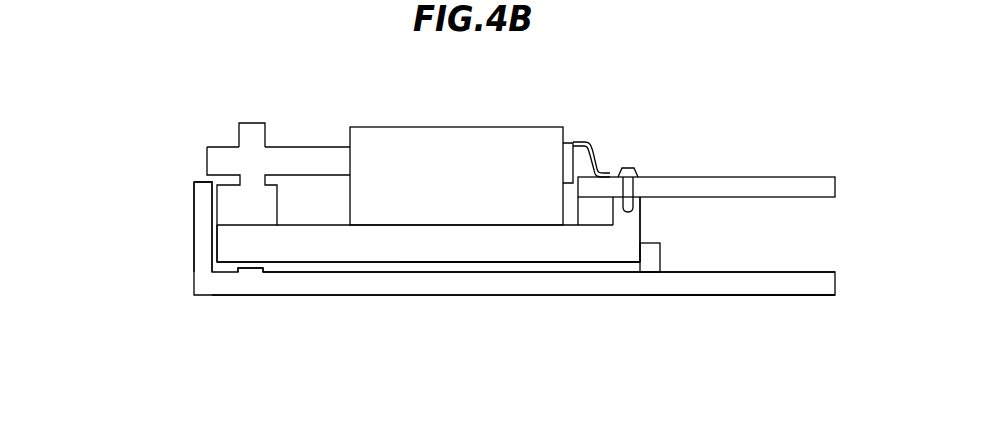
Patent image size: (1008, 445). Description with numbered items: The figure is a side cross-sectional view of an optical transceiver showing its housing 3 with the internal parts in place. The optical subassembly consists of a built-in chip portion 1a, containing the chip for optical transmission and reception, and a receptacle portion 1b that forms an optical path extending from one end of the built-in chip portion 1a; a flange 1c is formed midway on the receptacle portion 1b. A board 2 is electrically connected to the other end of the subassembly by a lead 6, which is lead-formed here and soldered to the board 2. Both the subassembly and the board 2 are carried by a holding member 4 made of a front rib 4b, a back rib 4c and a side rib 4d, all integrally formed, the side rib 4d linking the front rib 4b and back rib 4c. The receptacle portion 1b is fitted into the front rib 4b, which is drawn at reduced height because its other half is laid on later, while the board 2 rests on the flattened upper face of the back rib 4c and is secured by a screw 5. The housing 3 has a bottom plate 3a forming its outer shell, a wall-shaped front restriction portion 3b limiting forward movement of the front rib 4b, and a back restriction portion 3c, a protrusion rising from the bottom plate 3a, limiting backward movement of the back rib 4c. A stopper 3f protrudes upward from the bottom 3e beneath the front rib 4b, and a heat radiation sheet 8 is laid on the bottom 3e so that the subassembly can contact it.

The built-in chip portion 1a is at (390, 127).
The receptacle portion 1b is at (212, 148).
The flange 1c is at (252, 123).
The board 2 is at (448, 127).
The housing 3 is at (194, 260).
The bottom plate 3a is at (305, 296).
The front restriction portion 3b is at (196, 190).
The back restriction portion 3c is at (660, 258).
The bottom 3e is at (743, 272).
The stopper 3f is at (247, 273).
The holding member 4 is at (467, 253).
The front rib 4b is at (217, 215).
The back rib 4c is at (643, 215).
The side rib 4d is at (528, 253).
The screw 5 is at (631, 168).
The lead 6 is at (590, 142).
The heat radiation sheet 8 is at (353, 262).